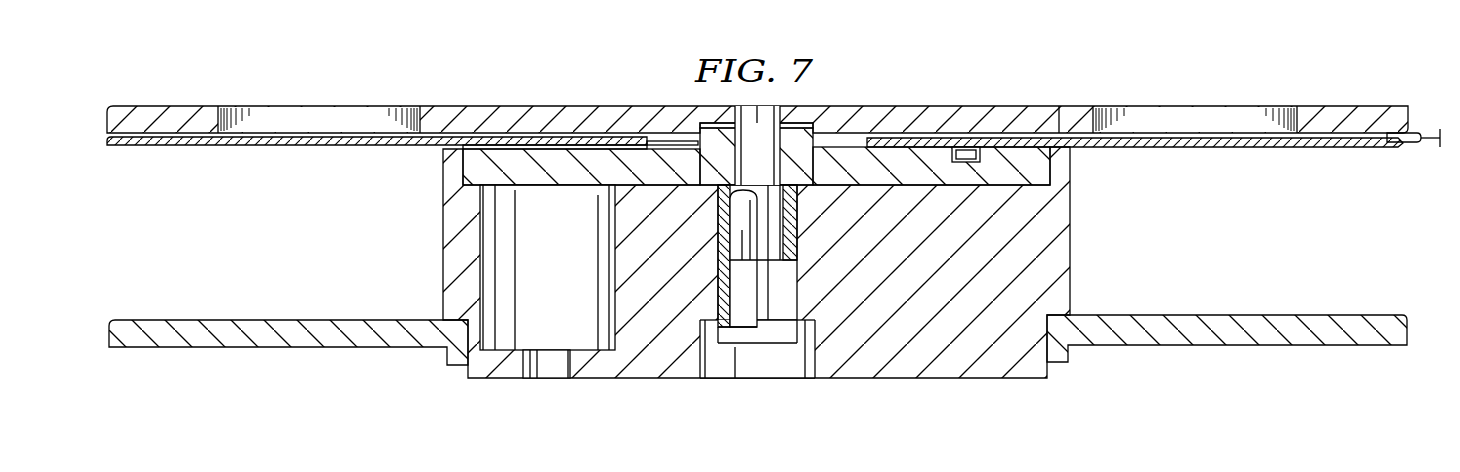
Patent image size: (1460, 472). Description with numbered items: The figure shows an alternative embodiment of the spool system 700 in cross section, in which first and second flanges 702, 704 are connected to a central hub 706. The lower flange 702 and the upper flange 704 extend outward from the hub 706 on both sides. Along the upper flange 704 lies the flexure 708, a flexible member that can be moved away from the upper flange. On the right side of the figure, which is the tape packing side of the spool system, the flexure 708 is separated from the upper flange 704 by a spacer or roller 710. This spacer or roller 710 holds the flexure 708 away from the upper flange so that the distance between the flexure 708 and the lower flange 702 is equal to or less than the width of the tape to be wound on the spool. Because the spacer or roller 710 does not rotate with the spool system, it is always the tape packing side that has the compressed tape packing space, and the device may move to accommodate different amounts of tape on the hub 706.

The assembly 700 is at (597, 84).
The first flange 702 is at (160, 345).
The second flange 704 is at (958, 110).
The hub 706 is at (1073, 245).
The flexure 708 is at (1222, 148).
The spacer or roller 710 is at (1412, 131).